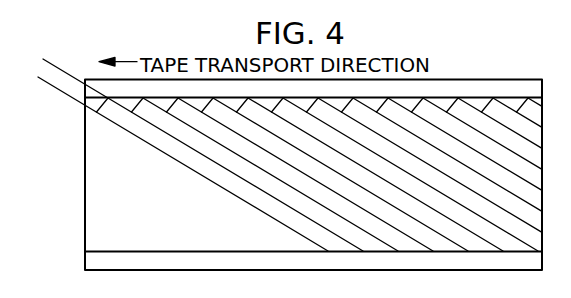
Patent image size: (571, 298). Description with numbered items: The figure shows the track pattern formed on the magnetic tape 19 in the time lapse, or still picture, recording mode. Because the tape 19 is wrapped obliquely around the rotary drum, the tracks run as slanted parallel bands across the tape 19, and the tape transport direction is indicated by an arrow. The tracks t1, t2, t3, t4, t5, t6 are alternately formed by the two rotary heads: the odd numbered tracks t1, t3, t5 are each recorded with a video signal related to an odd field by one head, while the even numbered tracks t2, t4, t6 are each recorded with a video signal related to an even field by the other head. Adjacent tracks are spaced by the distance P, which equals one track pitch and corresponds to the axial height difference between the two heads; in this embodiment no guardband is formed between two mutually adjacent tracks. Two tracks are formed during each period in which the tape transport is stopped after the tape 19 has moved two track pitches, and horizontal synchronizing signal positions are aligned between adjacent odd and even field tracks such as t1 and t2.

The magnetic tape 19 is at (488, 66).
The distance (track pitch) P is at (63, 50).
The first track t1 is at (328, 251).
The second track t2 is at (363, 251).
The third track t3 is at (398, 251).
The fourth track t4 is at (433, 251).
The fifth track t5 is at (468, 251).
The sixth track t6 is at (503, 251).